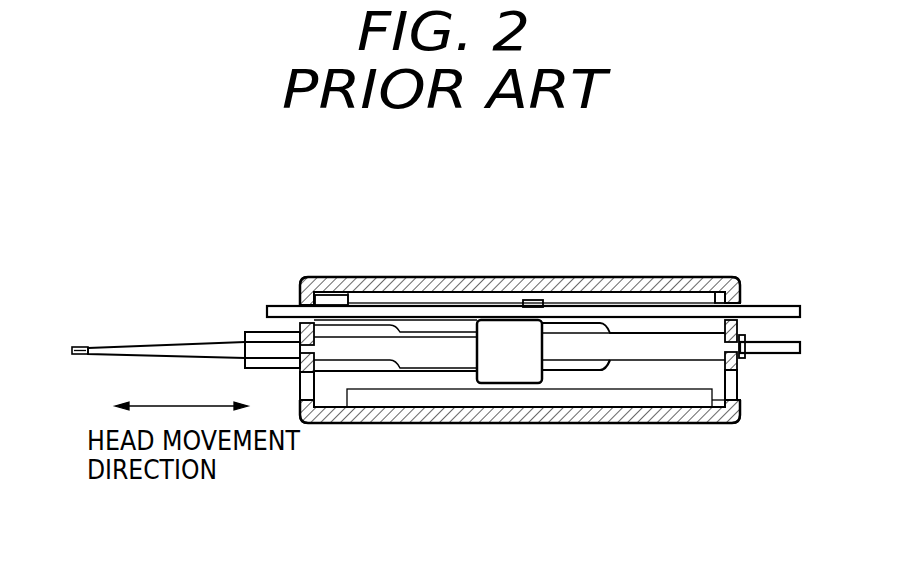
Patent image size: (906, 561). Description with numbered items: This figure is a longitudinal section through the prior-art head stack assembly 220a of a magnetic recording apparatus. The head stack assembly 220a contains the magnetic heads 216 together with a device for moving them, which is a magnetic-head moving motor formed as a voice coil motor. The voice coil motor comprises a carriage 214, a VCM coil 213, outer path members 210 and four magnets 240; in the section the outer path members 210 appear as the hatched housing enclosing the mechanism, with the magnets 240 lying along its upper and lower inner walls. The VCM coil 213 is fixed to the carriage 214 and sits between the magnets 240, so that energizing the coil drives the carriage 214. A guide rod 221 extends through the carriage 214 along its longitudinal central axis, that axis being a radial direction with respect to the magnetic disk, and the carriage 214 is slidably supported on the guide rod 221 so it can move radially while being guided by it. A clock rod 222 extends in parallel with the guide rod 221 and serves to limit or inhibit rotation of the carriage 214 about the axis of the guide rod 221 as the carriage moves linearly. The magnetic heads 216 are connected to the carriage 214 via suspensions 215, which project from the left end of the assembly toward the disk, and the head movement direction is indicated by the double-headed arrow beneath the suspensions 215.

The head stack assembly 220a is at (498, 242).
The outer path member 210 is at (622, 278).
The magnet 240 is at (701, 299).
The clock rod 222 is at (783, 307).
The guide rod 221 is at (786, 354).
The VCM coil 213 is at (515, 372).
The carriage 214 is at (424, 373).
The suspension 215 is at (183, 356).
The magnetic head 216 is at (80, 346).